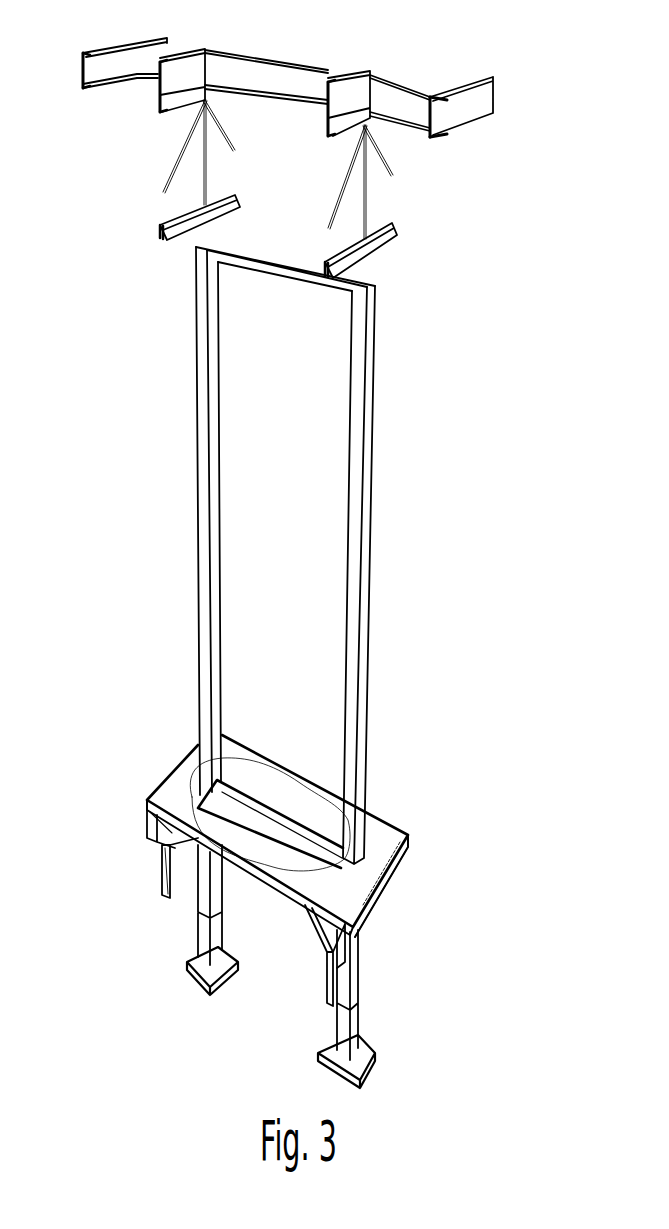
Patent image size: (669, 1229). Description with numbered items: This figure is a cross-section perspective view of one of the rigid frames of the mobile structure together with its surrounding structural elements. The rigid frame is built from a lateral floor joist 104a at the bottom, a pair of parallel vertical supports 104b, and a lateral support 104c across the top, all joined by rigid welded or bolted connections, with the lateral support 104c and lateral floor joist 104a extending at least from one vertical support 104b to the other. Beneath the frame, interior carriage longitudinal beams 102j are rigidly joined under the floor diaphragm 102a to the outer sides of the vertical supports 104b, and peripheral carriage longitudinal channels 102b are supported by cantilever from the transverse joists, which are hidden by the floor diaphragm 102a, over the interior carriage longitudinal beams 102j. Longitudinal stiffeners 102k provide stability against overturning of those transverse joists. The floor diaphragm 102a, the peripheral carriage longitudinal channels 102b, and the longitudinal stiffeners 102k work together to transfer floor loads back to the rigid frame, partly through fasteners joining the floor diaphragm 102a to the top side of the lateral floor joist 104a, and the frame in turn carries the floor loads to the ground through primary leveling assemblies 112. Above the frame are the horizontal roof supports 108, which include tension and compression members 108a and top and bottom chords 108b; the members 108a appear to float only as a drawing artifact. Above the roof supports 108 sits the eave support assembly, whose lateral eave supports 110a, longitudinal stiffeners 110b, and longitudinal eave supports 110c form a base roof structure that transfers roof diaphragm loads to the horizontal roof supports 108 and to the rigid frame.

The floor diaphragm 102a is at (377, 840).
The peripheral carriage longitudinal channel 102b is at (393, 882).
The interior carriage longitudinal beam 102j is at (175, 867).
The longitudinal stiffener 102k is at (168, 827).
The lateral floor joist 104a is at (237, 798).
The vertical support 104b is at (205, 482).
The lateral support 104c is at (298, 262).
The horizontal roof support 108 is at (158, 222).
The tension and compression member 108a is at (392, 173).
The top and bottom chord 108b is at (352, 248).
The lateral eave support 110a is at (420, 102).
The longitudinal stiffener 110b is at (182, 82).
The longitudinal eave support 110c is at (118, 58).
The primary leveling assembly 112 is at (208, 937).